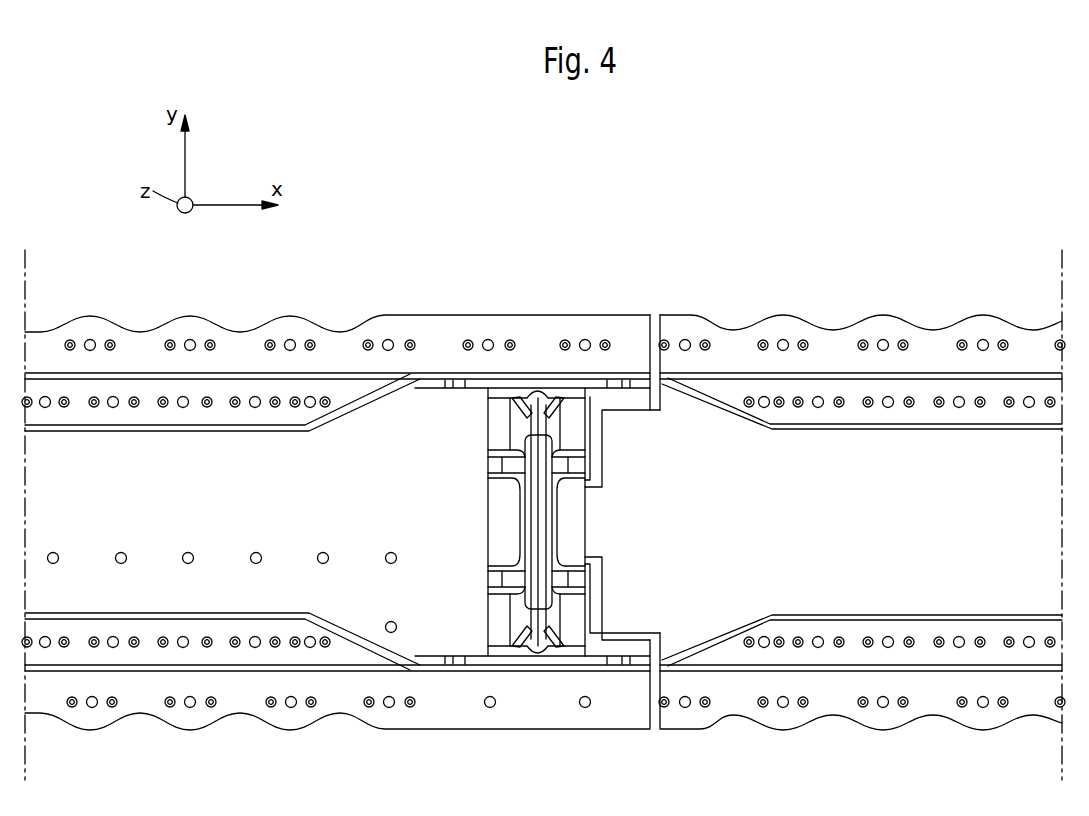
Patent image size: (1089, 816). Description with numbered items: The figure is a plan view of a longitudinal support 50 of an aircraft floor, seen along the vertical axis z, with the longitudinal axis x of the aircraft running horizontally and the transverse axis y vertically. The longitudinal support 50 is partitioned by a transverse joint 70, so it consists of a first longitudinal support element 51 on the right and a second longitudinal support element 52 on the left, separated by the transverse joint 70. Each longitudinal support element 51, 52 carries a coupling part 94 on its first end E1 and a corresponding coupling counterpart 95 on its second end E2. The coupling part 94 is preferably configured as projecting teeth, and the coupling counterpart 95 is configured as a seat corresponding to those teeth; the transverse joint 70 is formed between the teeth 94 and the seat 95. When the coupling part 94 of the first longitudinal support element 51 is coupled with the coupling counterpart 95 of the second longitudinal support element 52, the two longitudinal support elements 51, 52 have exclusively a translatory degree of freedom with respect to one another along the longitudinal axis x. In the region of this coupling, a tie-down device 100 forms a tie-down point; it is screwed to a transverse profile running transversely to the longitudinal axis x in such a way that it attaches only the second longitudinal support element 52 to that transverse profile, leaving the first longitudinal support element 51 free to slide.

The longitudinal support 50 is at (784, 237).
The first longitudinal support element 51 is at (888, 316).
The second longitudinal support element 52 is at (472, 313).
The transverse joint 70 is at (652, 723).
The coupling part 94 is at (597, 517).
The coupling counterpart 95 is at (595, 650).
The tie-down device 100 is at (522, 517).
The first end E1 is at (659, 316).
The second end E2 is at (650, 316).